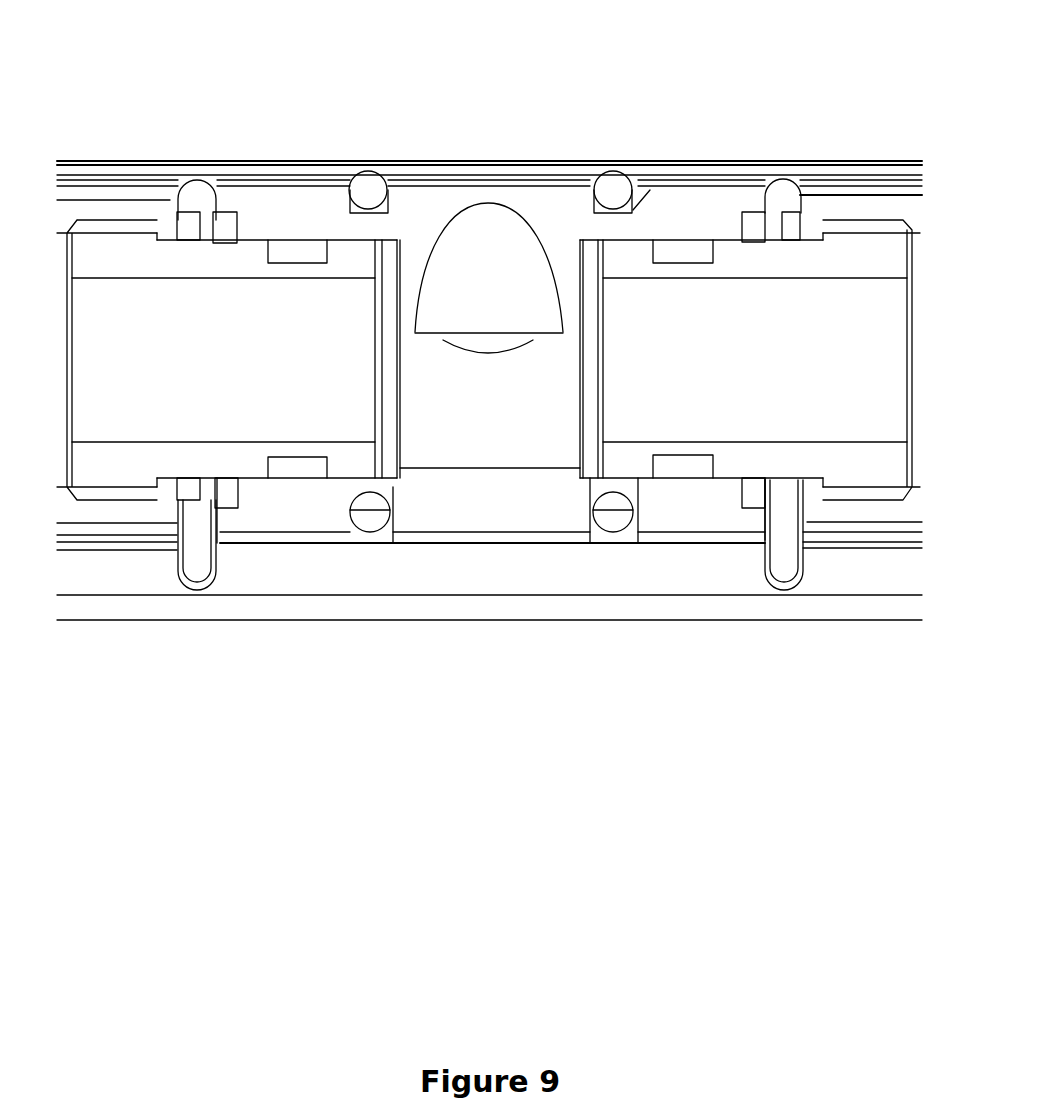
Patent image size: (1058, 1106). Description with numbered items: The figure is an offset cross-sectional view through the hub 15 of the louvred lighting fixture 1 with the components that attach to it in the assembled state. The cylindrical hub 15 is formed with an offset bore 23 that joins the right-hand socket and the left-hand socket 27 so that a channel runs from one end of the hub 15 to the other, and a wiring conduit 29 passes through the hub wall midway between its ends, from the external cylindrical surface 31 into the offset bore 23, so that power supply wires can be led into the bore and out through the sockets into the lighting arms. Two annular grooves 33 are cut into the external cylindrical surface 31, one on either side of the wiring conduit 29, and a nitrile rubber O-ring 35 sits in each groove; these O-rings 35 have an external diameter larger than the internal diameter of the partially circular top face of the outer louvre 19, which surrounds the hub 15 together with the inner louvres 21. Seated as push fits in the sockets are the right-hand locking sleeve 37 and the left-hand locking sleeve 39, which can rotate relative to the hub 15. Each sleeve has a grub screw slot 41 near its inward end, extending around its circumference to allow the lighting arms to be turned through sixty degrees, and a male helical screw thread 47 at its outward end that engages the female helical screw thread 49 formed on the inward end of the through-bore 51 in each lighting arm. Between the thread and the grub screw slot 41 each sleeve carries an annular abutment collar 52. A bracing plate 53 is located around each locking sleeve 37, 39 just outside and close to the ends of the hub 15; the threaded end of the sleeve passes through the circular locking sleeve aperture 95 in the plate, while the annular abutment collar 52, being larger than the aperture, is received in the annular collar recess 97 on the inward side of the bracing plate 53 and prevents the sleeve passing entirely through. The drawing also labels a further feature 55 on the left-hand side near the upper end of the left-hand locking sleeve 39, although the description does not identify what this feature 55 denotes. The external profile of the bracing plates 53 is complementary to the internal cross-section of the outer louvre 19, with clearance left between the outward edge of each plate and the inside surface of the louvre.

The louvred lighting fixture 1 is at (696, 65).
The hub 15 is at (698, 532).
The outer louvre 19 is at (257, 620).
The inner louvre 21 is at (170, 185).
The offset bore 23 is at (420, 443).
The left-hand socket 27 is at (345, 478).
The wiring conduit 29 is at (483, 325).
The external cylindrical surface 31 is at (500, 545).
The annular groove 33 is at (633, 210).
The O-ring 35 is at (365, 188).
The right-hand locking sleeve 37 is at (848, 465).
The left-hand locking sleeve 39 is at (108, 463).
The grub screw slot 41 is at (293, 263).
The male helical screw thread 47 is at (840, 233).
The female helical screw thread 49 is at (90, 233).
The through-bore 51 is at (917, 230).
The annular abutment collar 52 is at (205, 220).
The bracing plate 53 is at (785, 562).
The left upper clip 55 is at (133, 200).
The locking sleeve aperture 95 is at (180, 517).
The annular collar recess 97 is at (207, 510).